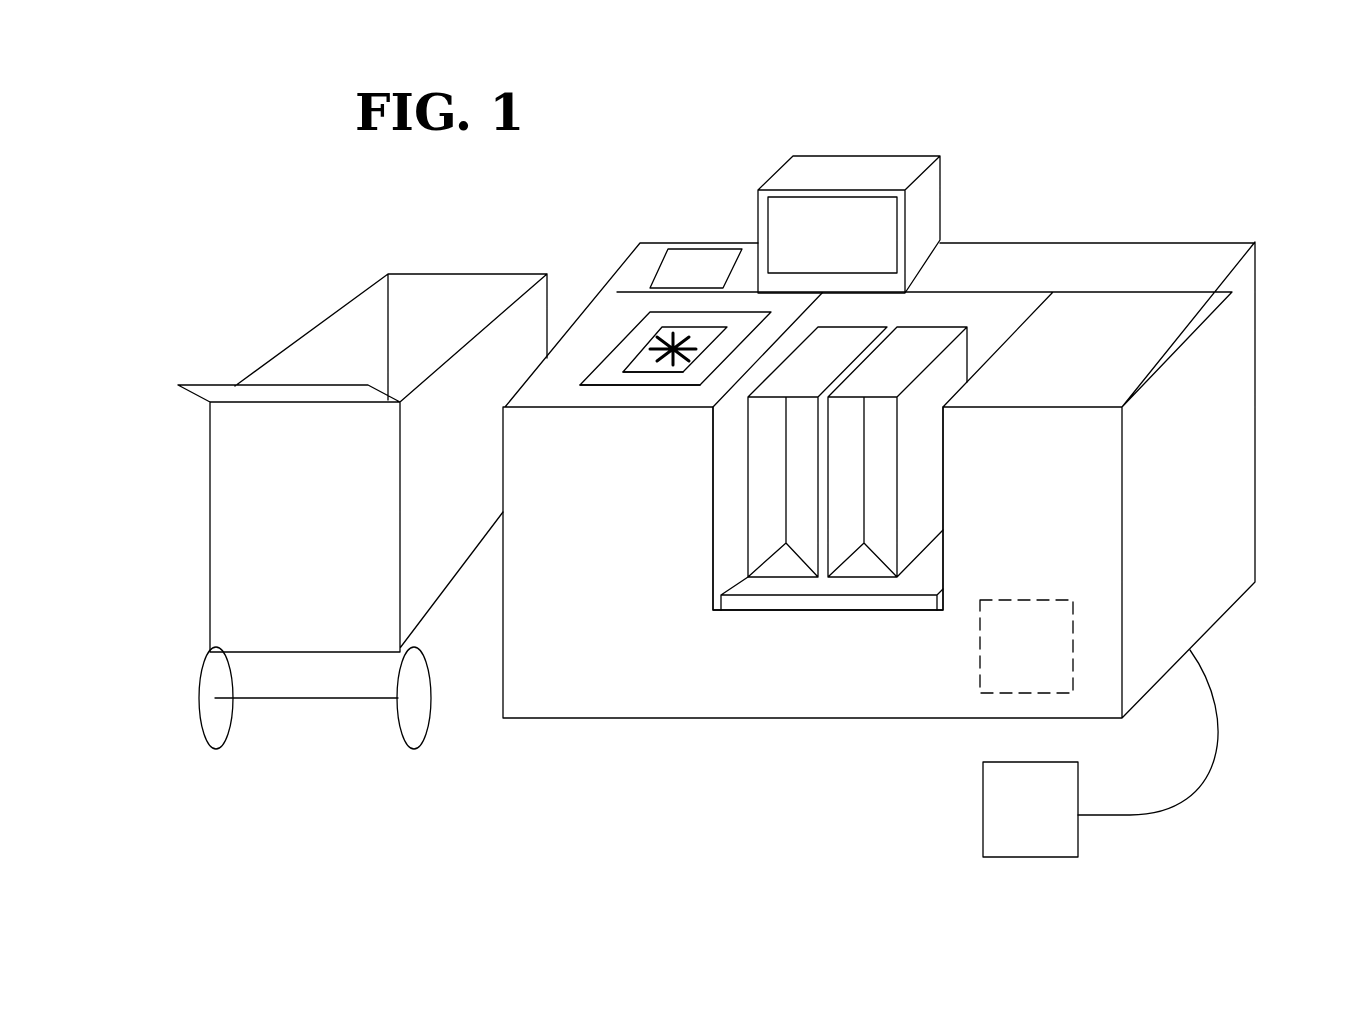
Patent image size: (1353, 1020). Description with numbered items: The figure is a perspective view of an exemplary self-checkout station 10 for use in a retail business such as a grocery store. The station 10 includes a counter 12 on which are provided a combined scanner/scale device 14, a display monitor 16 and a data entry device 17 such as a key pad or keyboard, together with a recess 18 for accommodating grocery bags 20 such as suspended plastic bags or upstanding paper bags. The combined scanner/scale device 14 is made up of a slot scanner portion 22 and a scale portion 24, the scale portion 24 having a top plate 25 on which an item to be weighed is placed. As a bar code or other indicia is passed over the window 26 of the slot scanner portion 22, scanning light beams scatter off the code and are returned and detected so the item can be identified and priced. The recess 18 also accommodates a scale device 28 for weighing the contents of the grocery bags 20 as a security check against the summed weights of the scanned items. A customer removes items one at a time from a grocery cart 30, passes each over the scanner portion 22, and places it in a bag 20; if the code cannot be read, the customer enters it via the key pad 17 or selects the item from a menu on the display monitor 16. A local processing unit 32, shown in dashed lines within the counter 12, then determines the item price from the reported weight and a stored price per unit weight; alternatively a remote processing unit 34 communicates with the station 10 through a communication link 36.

The self-checkout station 10 is at (1128, 142).
The counter 12 is at (1163, 312).
The combined scanner/scale device 14 is at (610, 341).
The display monitor 16 is at (848, 212).
The data entry device 17 is at (705, 255).
The recess 18 is at (950, 552).
The grocery bags 20 is at (927, 335).
The slot scanner portion 22 is at (630, 377).
The scale portion 24 is at (671, 390).
The top plate 25 is at (648, 337).
The window 26 is at (677, 333).
The scale device 28 is at (792, 602).
The grocery cart 30 is at (340, 333).
The local processing unit 32 is at (978, 663).
The remote processing unit 34 is at (1028, 857).
The communication link 36 is at (1210, 763).